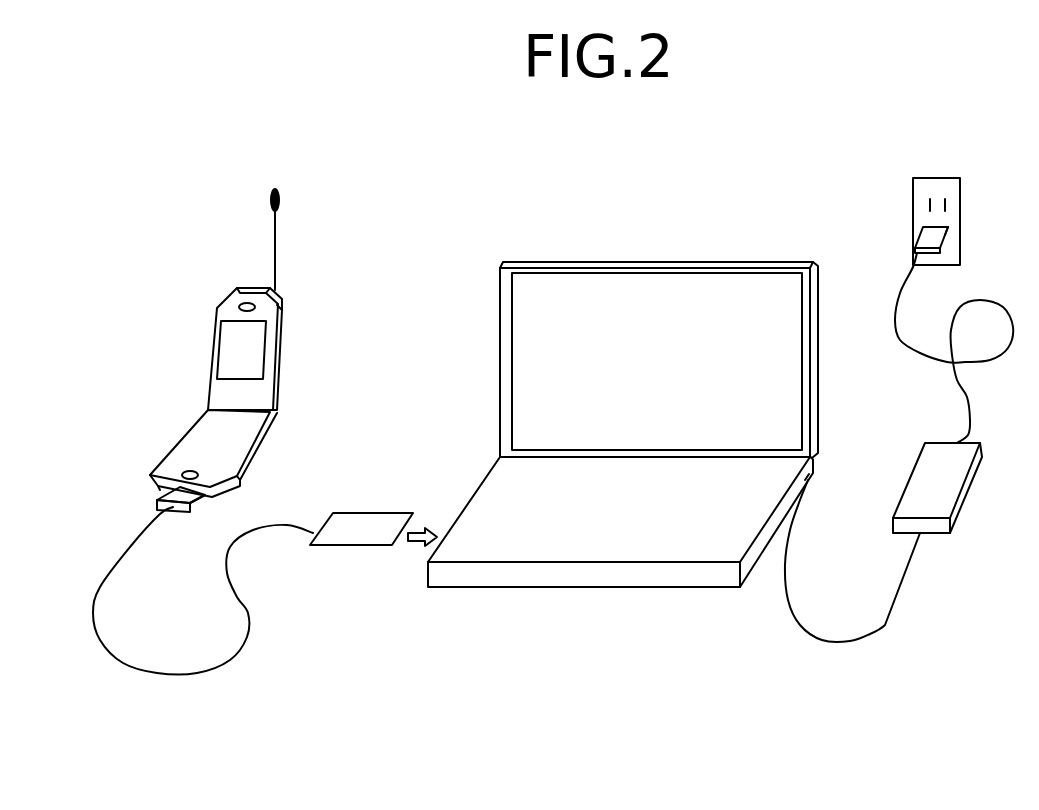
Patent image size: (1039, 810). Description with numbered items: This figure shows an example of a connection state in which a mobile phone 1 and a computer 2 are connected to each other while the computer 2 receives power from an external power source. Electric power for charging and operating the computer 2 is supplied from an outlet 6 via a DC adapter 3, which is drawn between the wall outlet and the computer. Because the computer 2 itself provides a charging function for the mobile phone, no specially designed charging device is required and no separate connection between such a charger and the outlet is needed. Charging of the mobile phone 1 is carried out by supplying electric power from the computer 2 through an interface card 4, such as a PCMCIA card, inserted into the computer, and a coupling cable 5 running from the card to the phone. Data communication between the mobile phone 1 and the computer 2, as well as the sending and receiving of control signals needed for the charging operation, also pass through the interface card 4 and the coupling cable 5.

The mobile phone 1 is at (287, 343).
The computer 2 is at (573, 587).
The DC adapter 3 is at (937, 533).
The interface card 4 is at (350, 547).
The coupling cable 5 is at (160, 675).
The outlet 6 is at (913, 217).